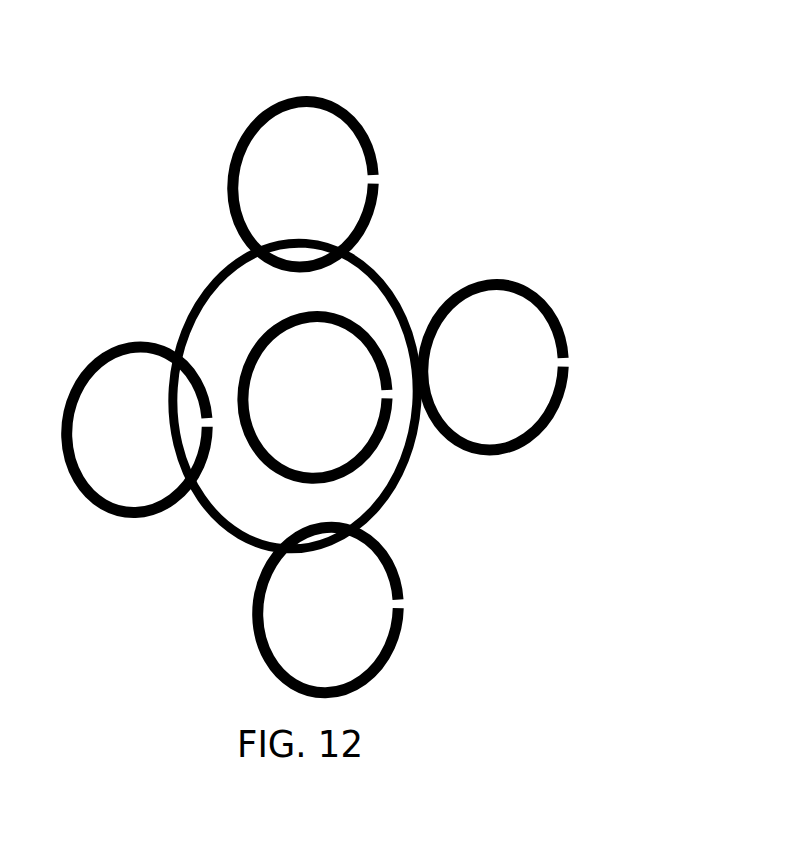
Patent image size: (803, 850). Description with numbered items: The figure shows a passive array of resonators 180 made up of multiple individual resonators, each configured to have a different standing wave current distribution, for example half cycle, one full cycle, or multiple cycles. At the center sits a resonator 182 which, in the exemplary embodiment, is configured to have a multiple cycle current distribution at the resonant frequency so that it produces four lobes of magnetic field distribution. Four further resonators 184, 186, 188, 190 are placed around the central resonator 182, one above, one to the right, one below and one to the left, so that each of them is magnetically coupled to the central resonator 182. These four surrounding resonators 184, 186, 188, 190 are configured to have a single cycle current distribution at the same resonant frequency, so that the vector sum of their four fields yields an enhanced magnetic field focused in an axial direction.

The array of resonators 180 is at (565, 62).
The central resonator 182 is at (353, 320).
The resonator 184 is at (375, 152).
The resonator 186 is at (517, 447).
The resonator 188 is at (262, 652).
The resonator 190 is at (108, 345).